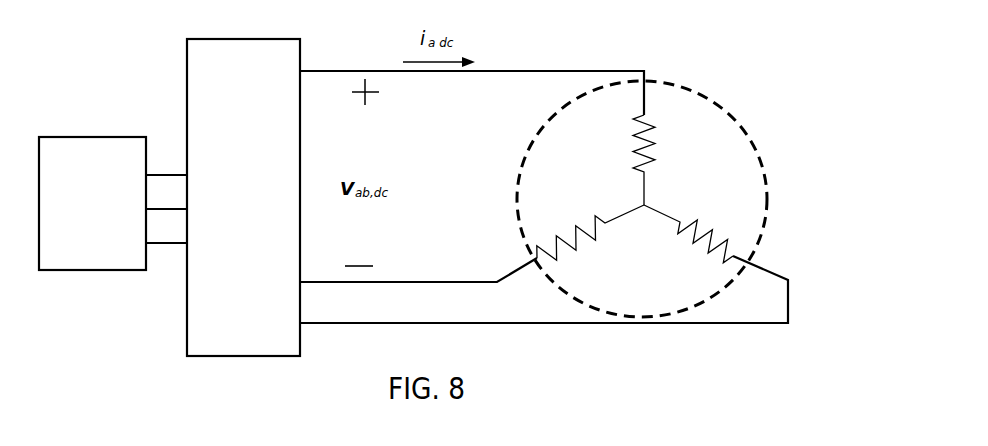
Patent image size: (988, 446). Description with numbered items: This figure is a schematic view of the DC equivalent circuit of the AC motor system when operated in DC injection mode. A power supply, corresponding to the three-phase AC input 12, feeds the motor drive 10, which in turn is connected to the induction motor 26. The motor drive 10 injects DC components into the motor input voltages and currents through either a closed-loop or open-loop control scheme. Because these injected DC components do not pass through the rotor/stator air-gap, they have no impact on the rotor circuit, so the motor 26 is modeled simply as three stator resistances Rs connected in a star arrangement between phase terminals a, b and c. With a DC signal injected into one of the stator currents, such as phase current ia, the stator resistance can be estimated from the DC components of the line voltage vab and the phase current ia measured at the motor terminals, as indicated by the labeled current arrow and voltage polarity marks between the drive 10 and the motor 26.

The motor drive 10 is at (199, 39).
The three-phase AC input 12 is at (59, 137).
The induction motor 26 is at (808, 137).